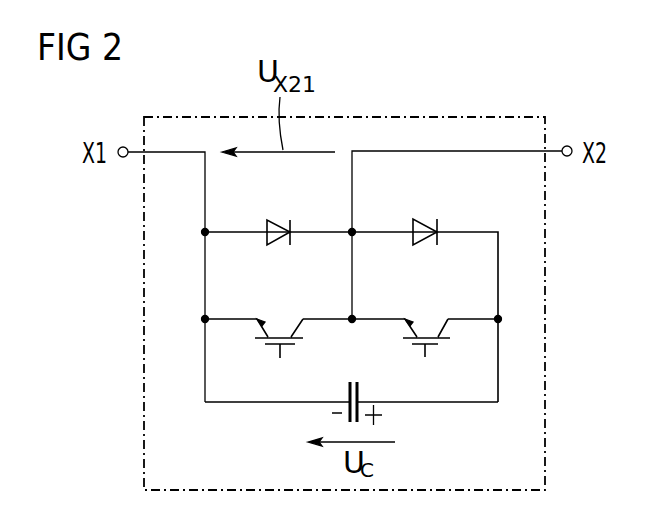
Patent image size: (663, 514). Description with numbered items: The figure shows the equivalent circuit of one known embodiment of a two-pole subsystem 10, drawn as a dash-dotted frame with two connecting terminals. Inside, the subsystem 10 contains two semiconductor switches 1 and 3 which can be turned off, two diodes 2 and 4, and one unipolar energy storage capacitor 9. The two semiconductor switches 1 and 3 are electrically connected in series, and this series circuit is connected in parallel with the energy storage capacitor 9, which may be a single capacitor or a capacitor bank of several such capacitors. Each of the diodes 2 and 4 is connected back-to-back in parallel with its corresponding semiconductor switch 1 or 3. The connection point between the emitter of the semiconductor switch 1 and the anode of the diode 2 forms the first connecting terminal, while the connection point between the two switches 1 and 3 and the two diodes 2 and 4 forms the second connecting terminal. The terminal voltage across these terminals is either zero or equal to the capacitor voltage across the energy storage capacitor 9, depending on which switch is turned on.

The semiconductor switch which can be turned off 1 is at (281, 333).
The diode 2 is at (279, 218).
The semiconductor switch which can be turned off 3 is at (425, 333).
The diode 4 is at (426, 218).
The unipolar energy storage capacitor 9 is at (352, 377).
The two-pole subsystem 10 is at (549, 312).